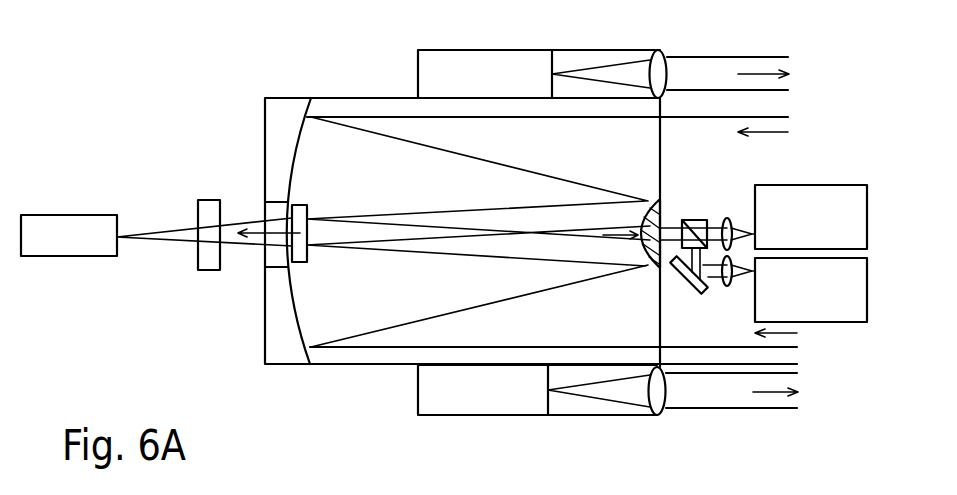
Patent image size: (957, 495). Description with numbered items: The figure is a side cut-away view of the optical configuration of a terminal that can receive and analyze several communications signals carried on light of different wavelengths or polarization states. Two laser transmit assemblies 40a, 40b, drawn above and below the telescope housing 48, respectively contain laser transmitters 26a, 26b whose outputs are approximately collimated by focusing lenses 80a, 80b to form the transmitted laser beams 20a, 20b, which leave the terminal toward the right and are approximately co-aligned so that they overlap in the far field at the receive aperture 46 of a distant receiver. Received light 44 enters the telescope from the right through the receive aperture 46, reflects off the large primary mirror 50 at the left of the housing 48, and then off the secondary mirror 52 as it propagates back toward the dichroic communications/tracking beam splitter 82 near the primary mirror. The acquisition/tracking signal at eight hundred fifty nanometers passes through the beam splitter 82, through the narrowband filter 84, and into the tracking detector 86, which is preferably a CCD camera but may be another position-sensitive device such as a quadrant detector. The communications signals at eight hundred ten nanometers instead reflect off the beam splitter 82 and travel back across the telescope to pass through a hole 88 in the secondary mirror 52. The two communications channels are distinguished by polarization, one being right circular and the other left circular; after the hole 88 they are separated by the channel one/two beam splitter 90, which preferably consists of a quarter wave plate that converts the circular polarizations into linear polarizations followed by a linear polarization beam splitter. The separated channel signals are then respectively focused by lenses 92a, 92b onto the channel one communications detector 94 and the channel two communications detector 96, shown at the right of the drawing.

The transmitted laser beam 20a is at (705, 67).
The transmitted laser beam 20b is at (690, 396).
The laser transmitter 26a is at (450, 50).
The laser transmitter 26b is at (487, 416).
The laser transmit assembly 40a is at (600, 50).
The laser transmit assembly 40b is at (583, 415).
The received light 44 is at (775, 133).
The receive aperture 46 is at (660, 328).
The housing 48 is at (371, 366).
The primary mirror 50 is at (292, 306).
The secondary mirror 52 is at (662, 207).
The focusing lens 80a is at (661, 50).
The focusing lens 80b is at (657, 418).
The dichroic communications/tracking beam splitter 82 is at (302, 204).
The narrowband filter 84 is at (210, 200).
The tracking detector 86 is at (60, 214).
The hole in the secondary mirror 88 is at (644, 207).
The channel one/two beam splitter 90 is at (700, 220).
The lens 92a is at (729, 218).
The lens 92b is at (731, 287).
The channel one communications detector 94 is at (825, 183).
The channel two communications detector 96 is at (843, 323).